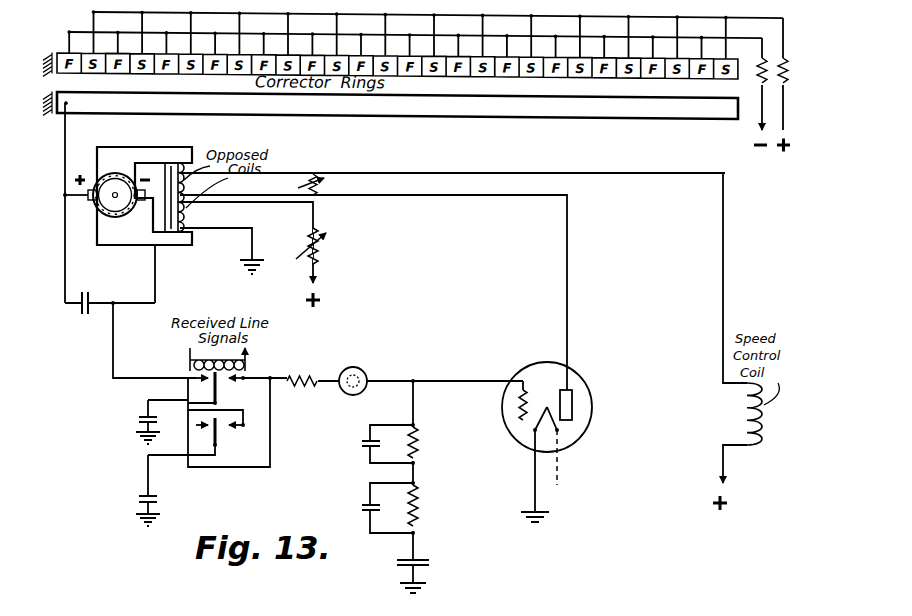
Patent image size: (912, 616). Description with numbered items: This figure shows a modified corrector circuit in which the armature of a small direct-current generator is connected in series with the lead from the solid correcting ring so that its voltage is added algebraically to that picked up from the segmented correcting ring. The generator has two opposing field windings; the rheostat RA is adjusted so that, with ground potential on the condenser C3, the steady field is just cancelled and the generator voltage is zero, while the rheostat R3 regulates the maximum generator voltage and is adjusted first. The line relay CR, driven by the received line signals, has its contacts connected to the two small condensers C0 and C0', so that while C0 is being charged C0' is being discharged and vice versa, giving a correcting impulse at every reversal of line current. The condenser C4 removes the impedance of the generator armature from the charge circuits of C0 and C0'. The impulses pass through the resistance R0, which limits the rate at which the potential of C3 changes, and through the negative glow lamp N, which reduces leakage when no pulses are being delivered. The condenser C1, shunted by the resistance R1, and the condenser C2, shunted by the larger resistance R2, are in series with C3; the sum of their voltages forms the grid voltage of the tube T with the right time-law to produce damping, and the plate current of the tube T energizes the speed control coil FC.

The field rheostat RA is at (332, 182).
The field rheostat R3 is at (325, 266).
The condenser C4 is at (70, 321).
The line relay CR is at (180, 364).
The small condenser C0 is at (132, 422).
The small condenser C0' is at (128, 490).
The resistance R0 is at (302, 367).
The negative glow lamp N is at (420, 371).
The shunt resistance R1 is at (425, 442).
The condenser C1 is at (372, 444).
The shunt resistance R2 is at (429, 507).
The condenser C2 is at (370, 508).
The condenser C3 is at (394, 569).
The vacuum tube T is at (577, 373).
The speed control coil FC is at (753, 341).